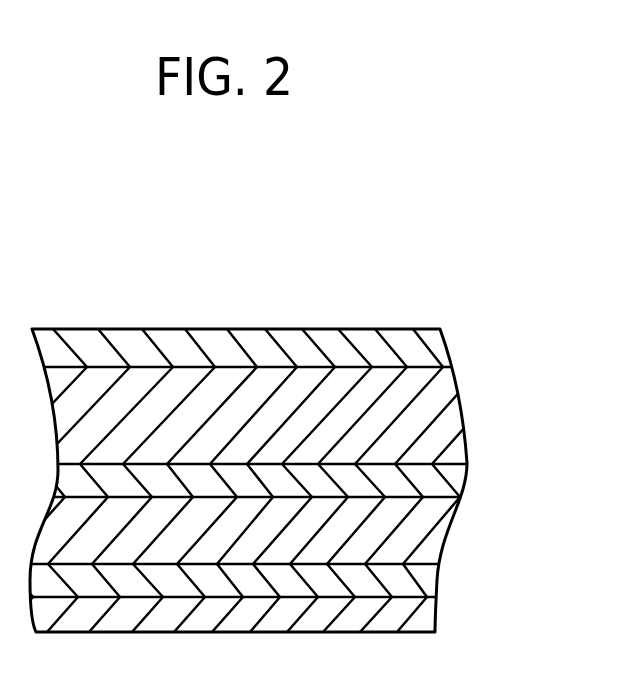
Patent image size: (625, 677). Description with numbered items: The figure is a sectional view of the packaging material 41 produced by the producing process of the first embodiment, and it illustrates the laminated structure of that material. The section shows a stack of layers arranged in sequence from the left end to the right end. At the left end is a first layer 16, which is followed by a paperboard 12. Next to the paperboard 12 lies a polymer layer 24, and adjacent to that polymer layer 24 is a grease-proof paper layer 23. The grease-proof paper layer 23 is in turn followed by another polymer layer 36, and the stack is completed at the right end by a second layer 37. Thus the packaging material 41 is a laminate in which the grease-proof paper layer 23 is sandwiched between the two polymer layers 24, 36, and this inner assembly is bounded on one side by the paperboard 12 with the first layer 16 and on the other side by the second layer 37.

The packaging material 41 is at (279, 316).
The first layer 16 is at (440, 350).
The paperboard 12 is at (452, 413).
The polymer layer 24 is at (457, 475).
The grease-proof paper layer 23 is at (435, 537).
The polymer layer 36 is at (423, 578).
The second layer 37 is at (425, 617).